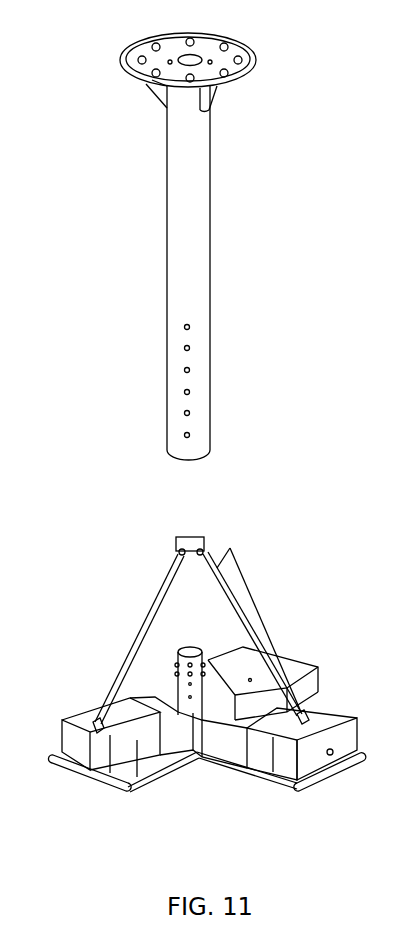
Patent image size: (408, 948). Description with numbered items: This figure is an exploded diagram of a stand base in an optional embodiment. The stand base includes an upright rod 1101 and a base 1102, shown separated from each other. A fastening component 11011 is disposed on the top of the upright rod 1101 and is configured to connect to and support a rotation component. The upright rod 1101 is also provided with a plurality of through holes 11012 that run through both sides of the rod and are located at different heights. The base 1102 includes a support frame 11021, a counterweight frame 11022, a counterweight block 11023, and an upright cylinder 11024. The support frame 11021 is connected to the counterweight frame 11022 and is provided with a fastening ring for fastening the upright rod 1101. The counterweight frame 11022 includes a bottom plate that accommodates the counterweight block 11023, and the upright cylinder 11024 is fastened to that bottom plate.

The upright rod 1101 is at (198, 247).
The fastening component 11011 is at (233, 42).
The through holes 11012 is at (189, 435).
The base 1102 is at (206, 676).
The support frame 11021 is at (163, 577).
The counterweight frame 11022 is at (93, 778).
The counterweight block 11023 is at (240, 752).
The upright cylinder 11024 is at (207, 618).